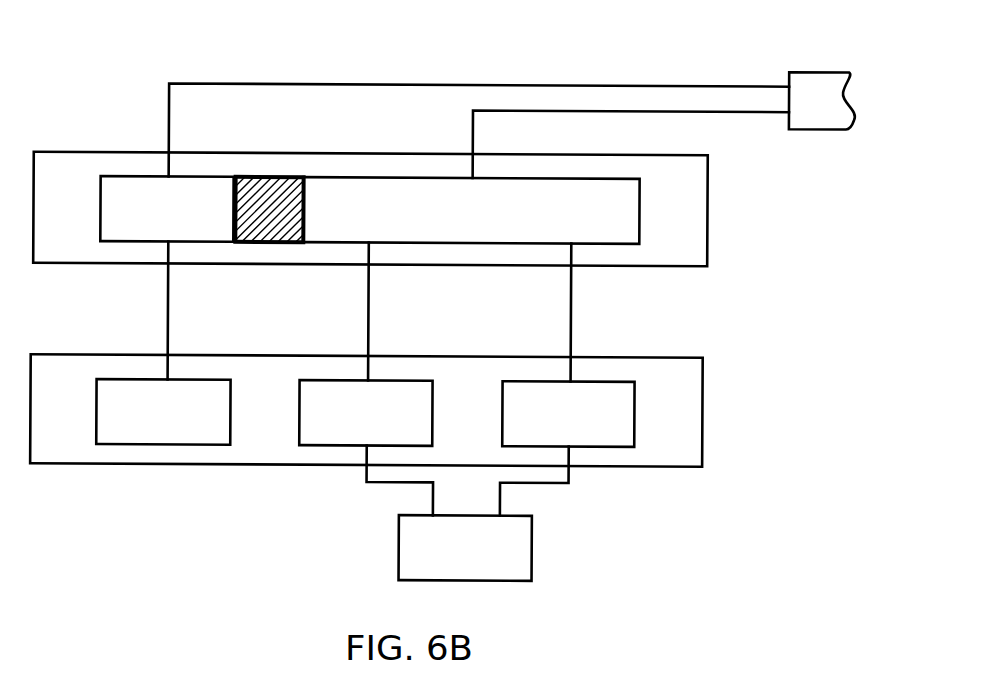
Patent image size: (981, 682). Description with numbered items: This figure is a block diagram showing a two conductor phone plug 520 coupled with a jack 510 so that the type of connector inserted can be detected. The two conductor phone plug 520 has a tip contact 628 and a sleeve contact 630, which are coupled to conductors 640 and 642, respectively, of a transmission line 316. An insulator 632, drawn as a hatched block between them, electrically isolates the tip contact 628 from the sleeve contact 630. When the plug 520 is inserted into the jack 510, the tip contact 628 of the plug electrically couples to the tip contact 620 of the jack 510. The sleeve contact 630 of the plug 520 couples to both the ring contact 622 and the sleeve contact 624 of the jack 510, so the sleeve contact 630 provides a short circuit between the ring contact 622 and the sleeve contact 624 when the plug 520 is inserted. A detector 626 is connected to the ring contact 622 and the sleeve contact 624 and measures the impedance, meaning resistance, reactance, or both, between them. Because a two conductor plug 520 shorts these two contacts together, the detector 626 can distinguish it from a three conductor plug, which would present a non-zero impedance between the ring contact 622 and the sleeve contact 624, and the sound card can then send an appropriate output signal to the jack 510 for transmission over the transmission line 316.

The two conductor phone plug 520 is at (76, 153).
The jack 510 is at (73, 356).
The tip contact 628 is at (203, 177).
The insulator 632 is at (287, 177).
The sleeve contact 630 is at (387, 177).
The conductor 640 is at (720, 84).
The conductor 642 is at (708, 112).
The transmission line 316 is at (830, 70).
The tip contact 620 is at (97, 427).
The ring contact 622 is at (300, 427).
The sleeve contact 624 is at (602, 449).
The detector 626 is at (533, 530).